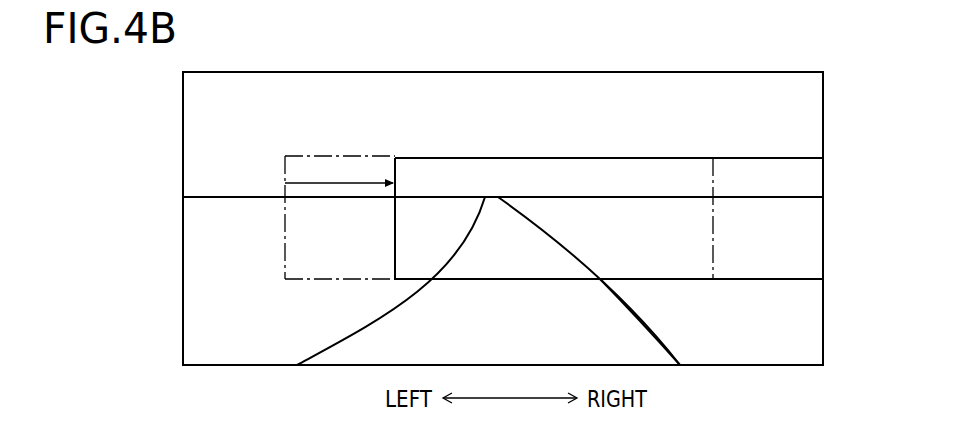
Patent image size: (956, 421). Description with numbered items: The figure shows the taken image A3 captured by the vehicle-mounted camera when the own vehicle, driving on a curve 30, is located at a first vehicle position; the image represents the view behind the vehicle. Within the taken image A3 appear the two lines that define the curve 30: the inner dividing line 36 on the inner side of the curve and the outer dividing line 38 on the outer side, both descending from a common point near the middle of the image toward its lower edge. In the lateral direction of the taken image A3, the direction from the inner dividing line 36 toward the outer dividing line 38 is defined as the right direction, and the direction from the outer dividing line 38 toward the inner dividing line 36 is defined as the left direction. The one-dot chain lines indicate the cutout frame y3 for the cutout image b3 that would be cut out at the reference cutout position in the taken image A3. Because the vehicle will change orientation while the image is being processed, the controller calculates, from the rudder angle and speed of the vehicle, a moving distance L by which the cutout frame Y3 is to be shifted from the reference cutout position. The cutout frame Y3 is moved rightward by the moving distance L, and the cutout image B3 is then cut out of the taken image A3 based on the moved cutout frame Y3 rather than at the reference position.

The taken image A3 is at (713, 86).
The cutout image B3 is at (624, 168).
The cutout frame Y3 is at (685, 158).
The cutout image b3 is at (300, 234).
The cutout frame y3 is at (285, 268).
The moving distance L is at (339, 173).
The curve 30 is at (543, 264).
The inner dividing line 36 is at (345, 342).
The outer dividing line 38 is at (668, 348).